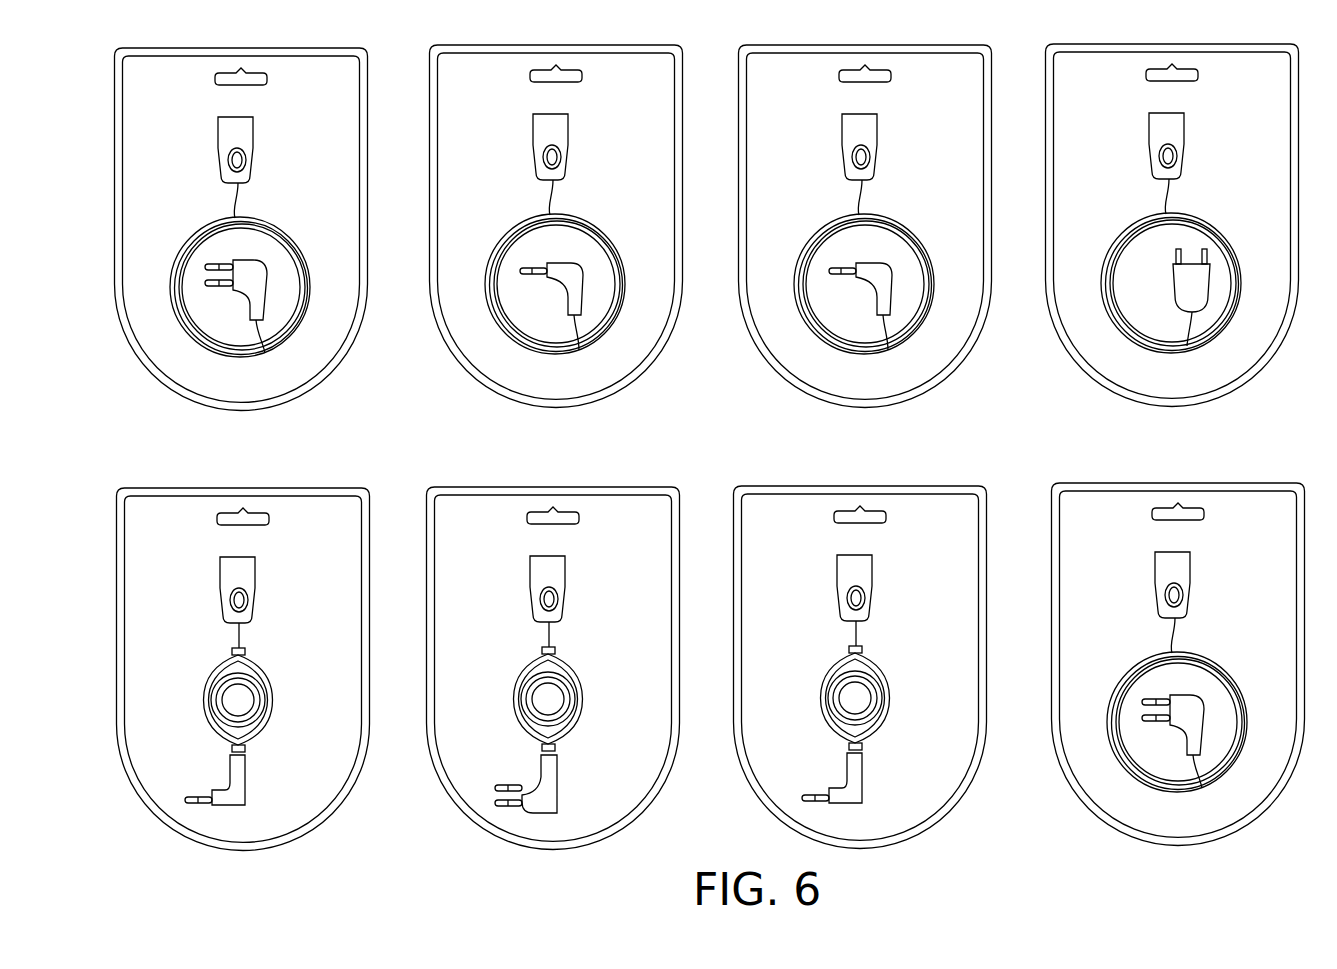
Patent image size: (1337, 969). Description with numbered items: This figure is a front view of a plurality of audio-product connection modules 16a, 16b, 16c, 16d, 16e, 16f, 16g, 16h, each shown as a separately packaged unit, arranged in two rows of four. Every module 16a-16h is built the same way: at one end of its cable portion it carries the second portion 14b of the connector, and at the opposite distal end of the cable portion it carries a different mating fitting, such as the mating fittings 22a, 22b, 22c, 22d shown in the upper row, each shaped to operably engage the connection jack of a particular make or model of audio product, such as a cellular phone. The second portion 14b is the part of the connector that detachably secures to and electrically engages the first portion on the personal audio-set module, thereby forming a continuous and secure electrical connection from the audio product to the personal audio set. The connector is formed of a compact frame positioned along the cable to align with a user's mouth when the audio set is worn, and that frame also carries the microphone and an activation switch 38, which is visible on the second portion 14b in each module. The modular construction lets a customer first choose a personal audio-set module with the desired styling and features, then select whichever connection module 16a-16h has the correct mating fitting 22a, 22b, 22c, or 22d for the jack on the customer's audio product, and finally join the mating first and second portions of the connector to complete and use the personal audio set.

The second portion 14b is at (747, 363).
The activation switch 38 is at (742, 386).
The mating fitting 22a is at (207, 347).
The mating fitting 22b is at (584, 271).
The mating fitting 22c is at (892, 271).
The mating fitting 22d is at (1226, 270).
The audio-product connection module 16a is at (241, 242).
The audio-product connection module 16b is at (556, 231).
The audio-product connection module 16c is at (865, 231).
The audio-product connection module 16d is at (1172, 230).
The audio-product connection module 16e is at (243, 676).
The audio-product connection module 16f is at (553, 675).
The audio-product connection module 16g is at (860, 675).
The audio-product connection module 16h is at (1178, 669).